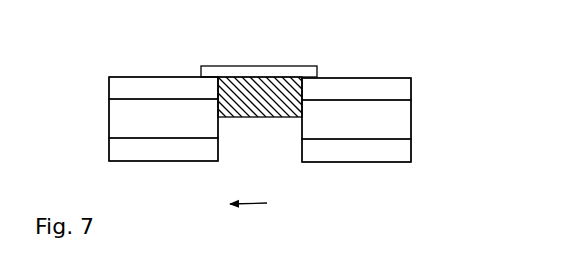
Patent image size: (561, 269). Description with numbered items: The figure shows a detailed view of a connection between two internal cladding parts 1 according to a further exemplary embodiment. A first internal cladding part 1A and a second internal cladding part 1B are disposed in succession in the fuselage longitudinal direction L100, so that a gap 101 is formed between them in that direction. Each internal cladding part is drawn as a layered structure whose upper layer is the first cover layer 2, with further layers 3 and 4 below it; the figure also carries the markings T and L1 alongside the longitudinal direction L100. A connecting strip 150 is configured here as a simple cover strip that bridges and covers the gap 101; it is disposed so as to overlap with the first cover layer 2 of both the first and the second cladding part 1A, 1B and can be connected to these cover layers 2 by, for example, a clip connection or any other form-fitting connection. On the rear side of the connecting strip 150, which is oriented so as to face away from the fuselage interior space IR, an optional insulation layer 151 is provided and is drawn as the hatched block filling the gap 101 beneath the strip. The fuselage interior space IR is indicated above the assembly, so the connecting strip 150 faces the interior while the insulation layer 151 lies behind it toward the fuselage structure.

The internal cladding part 1 is at (275, 161).
The first internal cladding part 1A is at (371, 182).
The second internal cladding part 1B is at (165, 175).
The first cover layer 2 is at (109, 88).
The inner glass layer 3 is at (118, 151).
The intermediate layer 4 is at (110, 125).
The gap 101 is at (290, 154).
The connecting strip 150 is at (311, 50).
The insulation layer 151 is at (263, 118).
The direction of travel T is at (248, 217).
The length L1 is at (250, 252).
The fuselage longitudinal direction L100 is at (295, 252).
The fuselage interior space IR is at (198, 46).